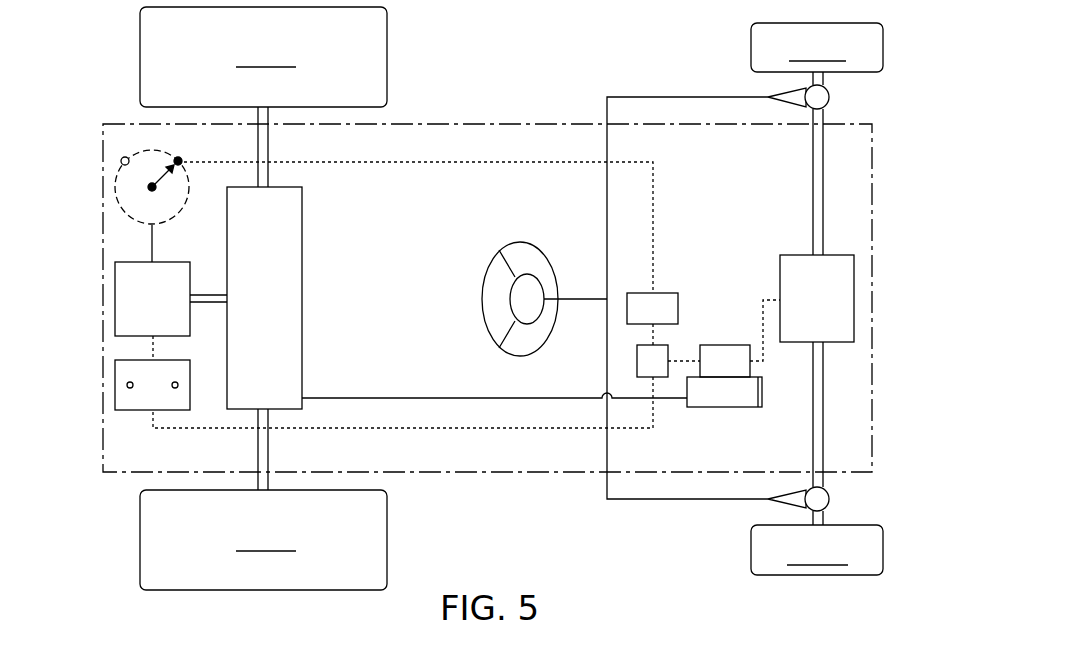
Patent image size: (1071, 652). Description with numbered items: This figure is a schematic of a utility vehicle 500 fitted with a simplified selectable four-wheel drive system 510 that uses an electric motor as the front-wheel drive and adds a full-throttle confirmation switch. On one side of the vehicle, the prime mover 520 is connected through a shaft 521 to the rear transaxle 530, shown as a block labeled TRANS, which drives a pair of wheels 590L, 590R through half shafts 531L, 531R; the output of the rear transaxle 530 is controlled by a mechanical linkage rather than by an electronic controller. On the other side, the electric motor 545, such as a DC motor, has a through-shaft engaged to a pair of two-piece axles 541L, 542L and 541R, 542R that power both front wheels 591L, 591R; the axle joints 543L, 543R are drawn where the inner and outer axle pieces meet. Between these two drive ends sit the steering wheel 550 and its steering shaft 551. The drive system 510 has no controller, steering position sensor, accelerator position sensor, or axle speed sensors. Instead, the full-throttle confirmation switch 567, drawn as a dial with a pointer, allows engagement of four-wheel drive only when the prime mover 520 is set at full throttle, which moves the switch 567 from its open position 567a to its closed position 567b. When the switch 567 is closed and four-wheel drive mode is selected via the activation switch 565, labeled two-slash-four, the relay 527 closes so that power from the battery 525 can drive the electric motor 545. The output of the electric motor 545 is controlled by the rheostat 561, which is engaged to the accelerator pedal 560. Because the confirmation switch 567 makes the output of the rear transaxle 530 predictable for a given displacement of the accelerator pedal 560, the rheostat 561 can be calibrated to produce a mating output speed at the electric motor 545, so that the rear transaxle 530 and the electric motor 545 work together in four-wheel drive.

The utility vehicle 500 is at (485, 80).
The selectable four-wheel drive system 510 is at (165, 461).
The prime mover 520 is at (115, 299).
The input shaft 521 is at (208, 292).
The battery 525 is at (115, 386).
The relay 527 is at (637, 356).
The rear transaxle 530 is at (302, 299).
The left front half shaft 531L is at (270, 138).
The right front half shaft 531R is at (270, 455).
The two-piece axle 541L is at (823, 181).
The two-piece axle 541R is at (823, 415).
The two-piece axle 542L is at (825, 78).
The two-piece axle 542R is at (825, 518).
The left wheel end disconnect 543L is at (825, 105).
The right wheel end disconnect 543R is at (817, 499).
The electric motor 545 is at (854, 310).
The steering wheel 550 is at (487, 272).
The steering shaft 551 is at (581, 297).
The accelerator pedal 560 is at (702, 407).
The rheostat 561 is at (722, 345).
The activation switch 565 is at (671, 292).
The full-throttle confirmation switch 567 is at (118, 215).
The open position 567a is at (121, 158).
The closed position 567b is at (180, 158).
The left front wheel 590L is at (263, 57).
The right front wheel 590R is at (263, 540).
The front wheel 591L is at (817, 47).
The front wheel 591R is at (817, 550).